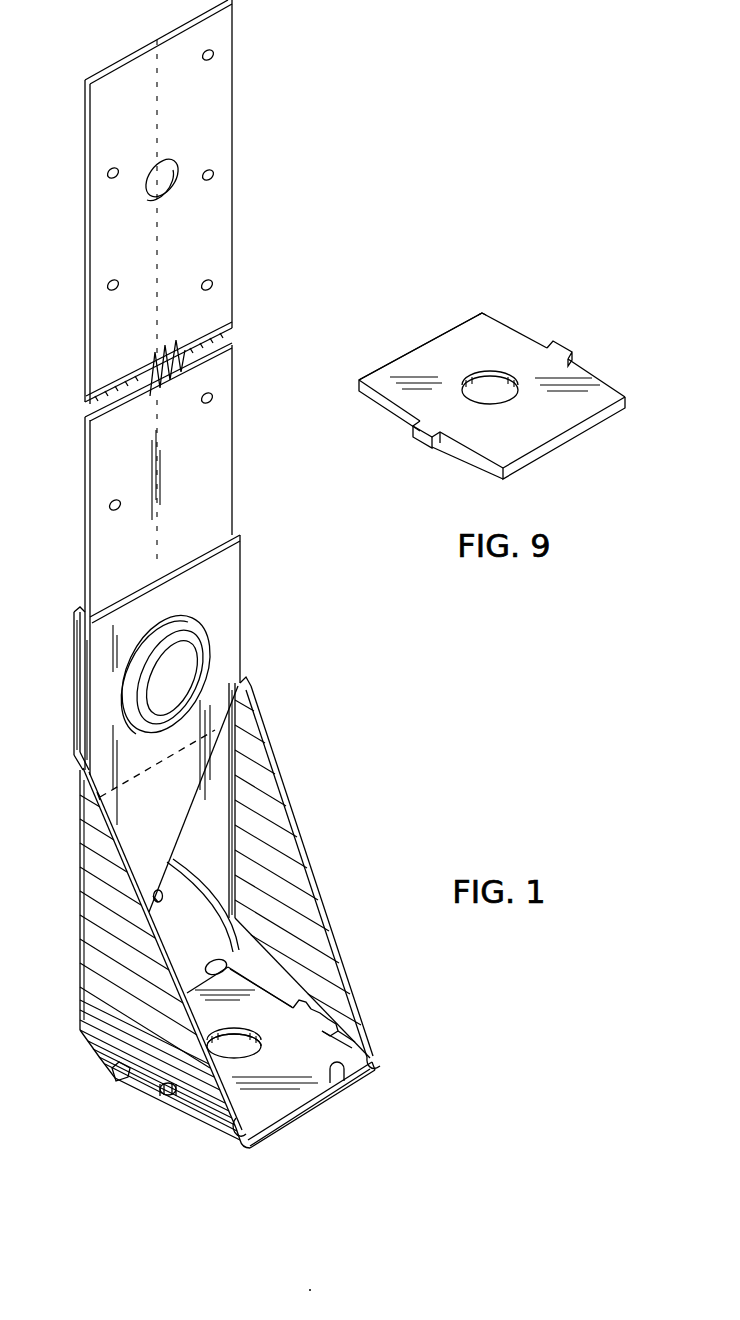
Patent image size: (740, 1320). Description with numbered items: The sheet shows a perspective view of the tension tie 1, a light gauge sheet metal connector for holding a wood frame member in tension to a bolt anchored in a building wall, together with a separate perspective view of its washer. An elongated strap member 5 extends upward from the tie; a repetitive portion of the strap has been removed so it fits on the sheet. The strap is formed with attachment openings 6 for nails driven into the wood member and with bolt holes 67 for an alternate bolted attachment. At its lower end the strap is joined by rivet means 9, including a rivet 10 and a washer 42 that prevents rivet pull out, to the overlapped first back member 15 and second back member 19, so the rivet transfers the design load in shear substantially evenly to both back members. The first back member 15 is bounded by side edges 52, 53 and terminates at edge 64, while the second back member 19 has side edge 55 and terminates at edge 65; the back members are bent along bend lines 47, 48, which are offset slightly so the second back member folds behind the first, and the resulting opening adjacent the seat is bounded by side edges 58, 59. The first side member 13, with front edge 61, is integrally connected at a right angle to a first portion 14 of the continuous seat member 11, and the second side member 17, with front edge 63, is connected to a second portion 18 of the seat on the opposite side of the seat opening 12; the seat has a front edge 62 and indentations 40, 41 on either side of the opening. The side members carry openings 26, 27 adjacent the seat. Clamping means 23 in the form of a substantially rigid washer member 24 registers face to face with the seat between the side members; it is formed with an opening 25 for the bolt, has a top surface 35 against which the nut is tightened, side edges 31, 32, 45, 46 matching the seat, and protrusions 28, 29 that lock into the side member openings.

In FIG. 1, the tension tie 1 is at (185, 528).
In FIG. 1, the elongated strap member 5 is at (223, 388).
In FIG. 1, the attachment openings 6 is at (114, 170).
In FIG. 1, the bolt holes 67 is at (155, 178).
In FIG. 1, the side edge of first back member 53 is at (240, 558).
In FIG. 1, the edge of first back member 64 is at (221, 540).
In FIG. 1, the edge of second back member 65 is at (80, 607).
In FIG. 1, the second back member 19 is at (78, 634).
In FIG. 1, the side edge of second back member 55 is at (80, 641).
In FIG. 1, the side edge of first back member 52 is at (88, 742).
In FIG. 1, the first back member 15 is at (106, 664).
In FIG. 1, the washer 42 is at (180, 624).
In FIG. 1, the rivet means 9 is at (202, 642).
In FIG. 1, the rivet 10 is at (185, 670).
In FIG. 1, the second side member 17 is at (298, 870).
In FIG. 1, the front edge of second side member 63 is at (322, 900).
In FIG. 1, the bend line 48 is at (238, 757).
In FIG. 1, the side edge 59 is at (192, 892).
In FIG. 1, the side edge 58 is at (156, 890).
In FIG. 1, the front edge of first side member 61 is at (160, 958).
In FIG. 1, the side edge of washer member 45 is at (232, 968).
In FIG. 9, the side edge of washer member 45 is at (580, 430).
In FIG. 1, the first side member 13 is at (115, 942).
In FIG. 1, the bend line 47 is at (80, 860).
In FIG. 1, the seat member 11 is at (345, 1075).
In FIG. 1, the first portion of seat member 14 is at (265, 1147).
In FIG. 1, the indentation 40 is at (215, 1128).
In FIG. 1, the second portion of seat member 18 is at (380, 1072).
In FIG. 1, the front edge of seat member 62 is at (375, 1080).
In FIG. 1, the top surface of washer 35 is at (278, 1077).
In FIG. 9, the top surface of washer 35 is at (490, 444).
In FIG. 1, the opening of washer member 25 is at (222, 1040).
In FIG. 9, the opening of washer member 25 is at (480, 378).
In FIG. 1, the seat opening 12 is at (240, 1040).
In FIG. 1, the side edge of washer member 32 is at (330, 1025).
In FIG. 9, the side edge of washer member 32 is at (598, 372).
In FIG. 1, the opening in second side member 27 is at (305, 1000).
In FIG. 1, the protrusion of washer member 29 is at (320, 1012).
In FIG. 9, the protrusion of washer member 29 is at (567, 347).
In FIG. 1, the clamping means 23 is at (342, 1031).
In FIG. 9, the clamping means 23 is at (490, 312).
In FIG. 1, the washer member 24 is at (340, 1050).
In FIG. 9, the washer member 24 is at (500, 330).
In FIG. 1, the side edge of washer member 31 is at (240, 1122).
In FIG. 9, the side edge of washer member 31 is at (380, 402).
In FIG. 1, the indentation 41 is at (118, 1072).
In FIG. 1, the opening in first side member 26 is at (160, 1086).
In FIG. 1, the protrusion of washer member 28 is at (167, 1095).
In FIG. 9, the protrusion of washer member 28 is at (410, 440).
In FIG. 9, the side edge of washer member 46 is at (408, 348).